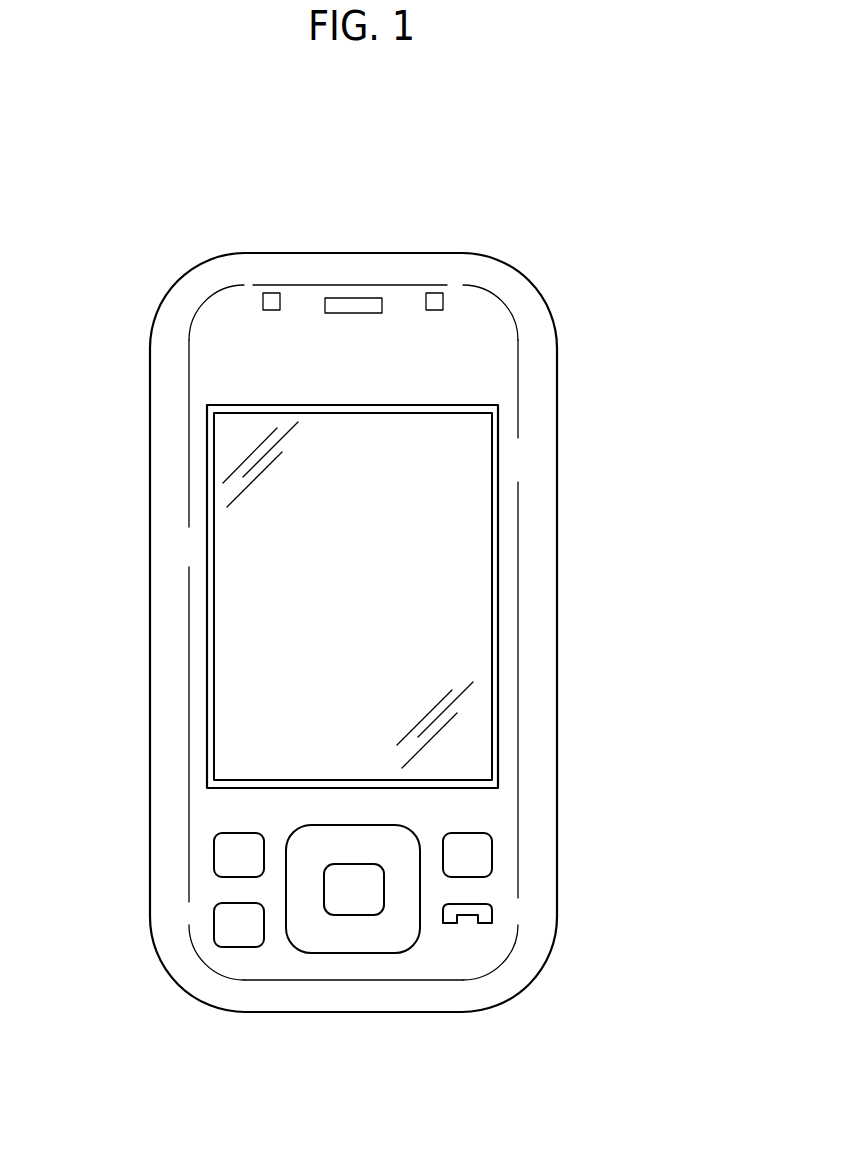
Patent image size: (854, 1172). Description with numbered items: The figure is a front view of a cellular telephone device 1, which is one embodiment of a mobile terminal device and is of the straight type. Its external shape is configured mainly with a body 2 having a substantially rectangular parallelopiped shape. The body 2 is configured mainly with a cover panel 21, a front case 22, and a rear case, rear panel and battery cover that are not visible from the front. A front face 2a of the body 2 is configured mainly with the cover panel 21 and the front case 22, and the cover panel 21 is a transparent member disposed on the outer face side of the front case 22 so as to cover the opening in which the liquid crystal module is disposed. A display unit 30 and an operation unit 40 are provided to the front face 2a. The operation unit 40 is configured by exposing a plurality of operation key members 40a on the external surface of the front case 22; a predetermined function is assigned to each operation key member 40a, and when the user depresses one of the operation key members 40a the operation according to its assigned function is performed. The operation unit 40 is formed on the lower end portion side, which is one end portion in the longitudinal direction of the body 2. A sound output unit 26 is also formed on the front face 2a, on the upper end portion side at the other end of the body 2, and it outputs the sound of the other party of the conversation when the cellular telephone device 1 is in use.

The cellular telephone device 1 is at (246, 155).
The body 2 is at (572, 381).
The front face 2a is at (221, 306).
The cover panel 21 is at (230, 548).
The front case 22 is at (170, 373).
The sound output unit 26 is at (383, 306).
The display unit 30 is at (450, 643).
The operation unit 40 is at (525, 1057).
The operation key member 40a is at (222, 862).